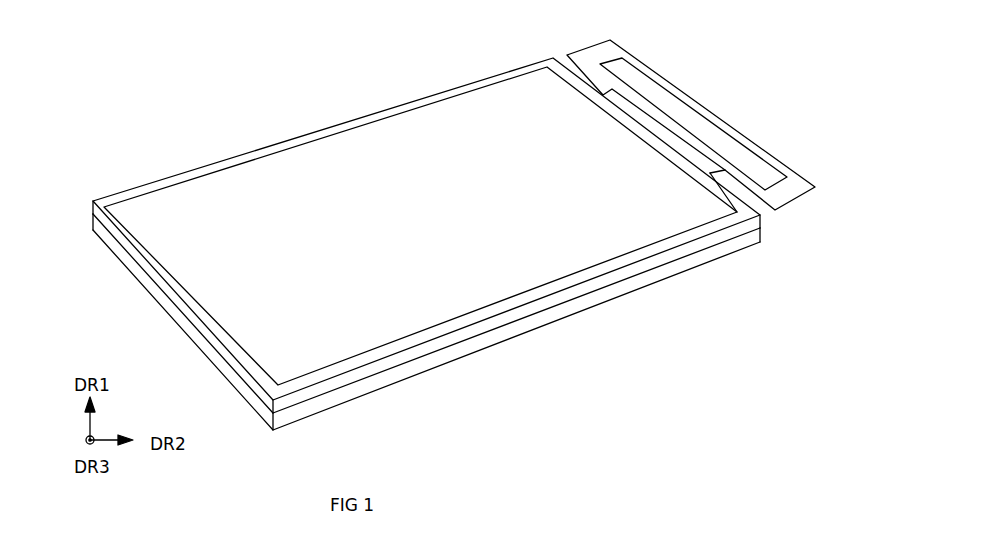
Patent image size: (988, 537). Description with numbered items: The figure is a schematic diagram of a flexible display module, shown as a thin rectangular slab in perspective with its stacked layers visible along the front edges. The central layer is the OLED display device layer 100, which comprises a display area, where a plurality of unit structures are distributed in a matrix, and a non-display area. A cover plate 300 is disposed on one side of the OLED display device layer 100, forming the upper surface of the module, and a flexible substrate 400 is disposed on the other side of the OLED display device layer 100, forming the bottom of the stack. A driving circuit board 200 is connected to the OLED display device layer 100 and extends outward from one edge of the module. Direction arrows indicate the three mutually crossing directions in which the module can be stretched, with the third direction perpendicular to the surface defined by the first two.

The OLED display device layer 100 is at (112, 260).
The driving circuit board 200 is at (812, 188).
The cover plate 300 is at (122, 215).
The flexible substrate 400 is at (122, 286).